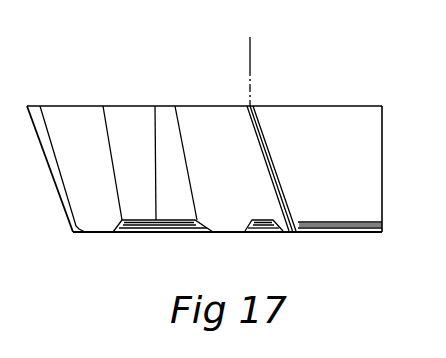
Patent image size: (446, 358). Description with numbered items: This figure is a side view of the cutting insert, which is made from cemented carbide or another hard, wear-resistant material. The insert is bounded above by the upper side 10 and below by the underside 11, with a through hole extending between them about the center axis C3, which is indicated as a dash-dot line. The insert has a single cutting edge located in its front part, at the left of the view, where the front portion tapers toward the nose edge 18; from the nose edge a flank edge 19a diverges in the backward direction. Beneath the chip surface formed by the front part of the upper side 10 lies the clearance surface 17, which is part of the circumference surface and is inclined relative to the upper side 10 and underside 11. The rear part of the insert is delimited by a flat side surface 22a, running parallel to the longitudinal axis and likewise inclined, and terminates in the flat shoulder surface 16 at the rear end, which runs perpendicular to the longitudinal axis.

The upper side 10 is at (313, 106).
The underside 11 is at (325, 233).
The shoulder surface 16 is at (382, 152).
The clearance surface 17 is at (237, 182).
The nose edge 18 is at (27, 106).
The flank edge 19a is at (137, 106).
The side surface 22a is at (357, 182).
The center axis C3 is at (250, 68).